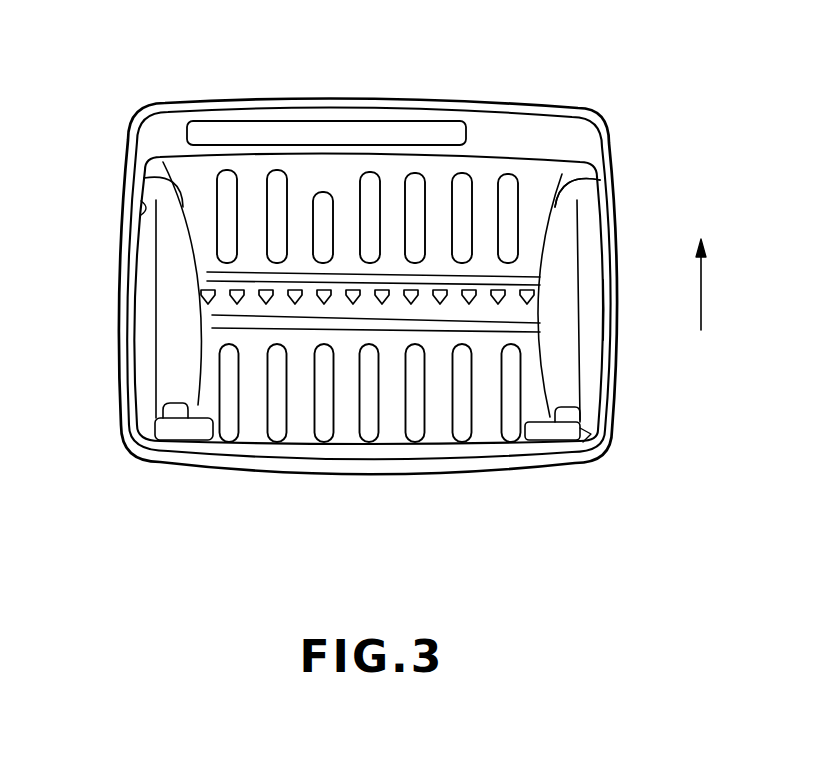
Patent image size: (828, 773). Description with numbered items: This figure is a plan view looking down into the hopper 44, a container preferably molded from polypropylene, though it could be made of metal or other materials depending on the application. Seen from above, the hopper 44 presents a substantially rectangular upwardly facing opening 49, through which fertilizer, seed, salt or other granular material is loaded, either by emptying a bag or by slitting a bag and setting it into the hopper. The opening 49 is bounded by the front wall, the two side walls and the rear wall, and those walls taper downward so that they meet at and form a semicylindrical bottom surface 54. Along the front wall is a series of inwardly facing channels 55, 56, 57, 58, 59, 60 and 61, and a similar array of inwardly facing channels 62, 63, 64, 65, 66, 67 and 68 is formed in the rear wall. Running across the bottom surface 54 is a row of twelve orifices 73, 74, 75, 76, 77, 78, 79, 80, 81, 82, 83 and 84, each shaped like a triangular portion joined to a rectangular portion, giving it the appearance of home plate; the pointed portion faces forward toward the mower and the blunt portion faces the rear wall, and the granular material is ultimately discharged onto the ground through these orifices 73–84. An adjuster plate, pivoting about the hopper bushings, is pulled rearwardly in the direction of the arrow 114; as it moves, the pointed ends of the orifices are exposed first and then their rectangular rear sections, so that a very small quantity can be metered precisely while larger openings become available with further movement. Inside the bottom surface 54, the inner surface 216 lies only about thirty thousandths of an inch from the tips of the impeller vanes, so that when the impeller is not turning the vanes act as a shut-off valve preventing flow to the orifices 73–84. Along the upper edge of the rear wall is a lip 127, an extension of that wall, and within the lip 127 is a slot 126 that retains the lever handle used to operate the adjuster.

The hopper 44 is at (603, 116).
The upwardly facing opening 49 is at (150, 200).
The semicylindrical bottom surface 54 is at (483, 302).
The channel 55 is at (229, 432).
The channel 56 is at (277, 432).
The channel 57 is at (324, 432).
The channel 58 is at (371, 432).
The channel 59 is at (416, 432).
The channel 60 is at (462, 432).
The channel 61 is at (509, 432).
The channel 62 is at (227, 187).
The channel 63 is at (275, 188).
The channel 64 is at (372, 177).
The channel 65 is at (416, 178).
The channel 66 is at (462, 178).
The channel 67 is at (508, 180).
The channel 68 is at (553, 176).
The orifice 73 is at (203, 288).
The orifice 74 is at (214, 311).
The orifice 75 is at (250, 306).
The orifice 76 is at (282, 306).
The orifice 77 is at (320, 306).
The orifice 78 is at (356, 306).
The orifice 79 is at (384, 306).
The orifice 80 is at (412, 306).
The orifice 81 is at (443, 289).
The orifice 82 is at (477, 290).
The orifice 83 is at (535, 300).
The orifice 84 is at (602, 306).
The arrow 114 is at (701, 285).
The slot 126 is at (323, 194).
The lip 127 is at (338, 116).
The inner surface 216 is at (308, 306).